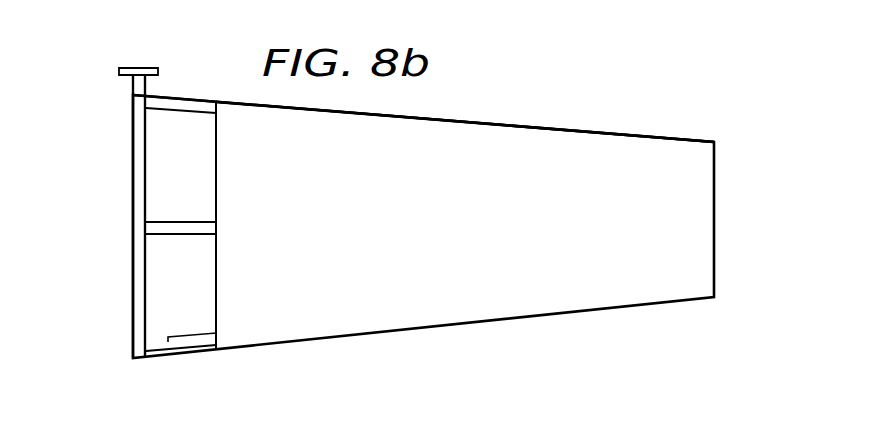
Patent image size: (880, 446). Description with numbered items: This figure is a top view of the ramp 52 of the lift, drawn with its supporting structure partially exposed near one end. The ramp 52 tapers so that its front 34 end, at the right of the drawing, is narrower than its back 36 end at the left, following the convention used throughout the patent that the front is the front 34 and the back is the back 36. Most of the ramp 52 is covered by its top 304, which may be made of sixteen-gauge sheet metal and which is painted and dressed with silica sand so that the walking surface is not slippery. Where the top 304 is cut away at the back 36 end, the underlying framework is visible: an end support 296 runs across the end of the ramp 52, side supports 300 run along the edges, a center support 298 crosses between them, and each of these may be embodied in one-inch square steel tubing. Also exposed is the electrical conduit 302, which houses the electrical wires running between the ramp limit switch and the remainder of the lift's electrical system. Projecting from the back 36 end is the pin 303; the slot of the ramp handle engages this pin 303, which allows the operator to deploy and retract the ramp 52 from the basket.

The front 34 is at (738, 234).
The ramp 52 is at (600, 132).
The top 304 is at (475, 132).
The back 36 is at (96, 245).
The end supports 296 is at (137, 152).
The pin 303 is at (137, 66).
The side supports 300 is at (190, 115).
The center support 298 is at (187, 226).
The electrical conduit 302 is at (196, 335).